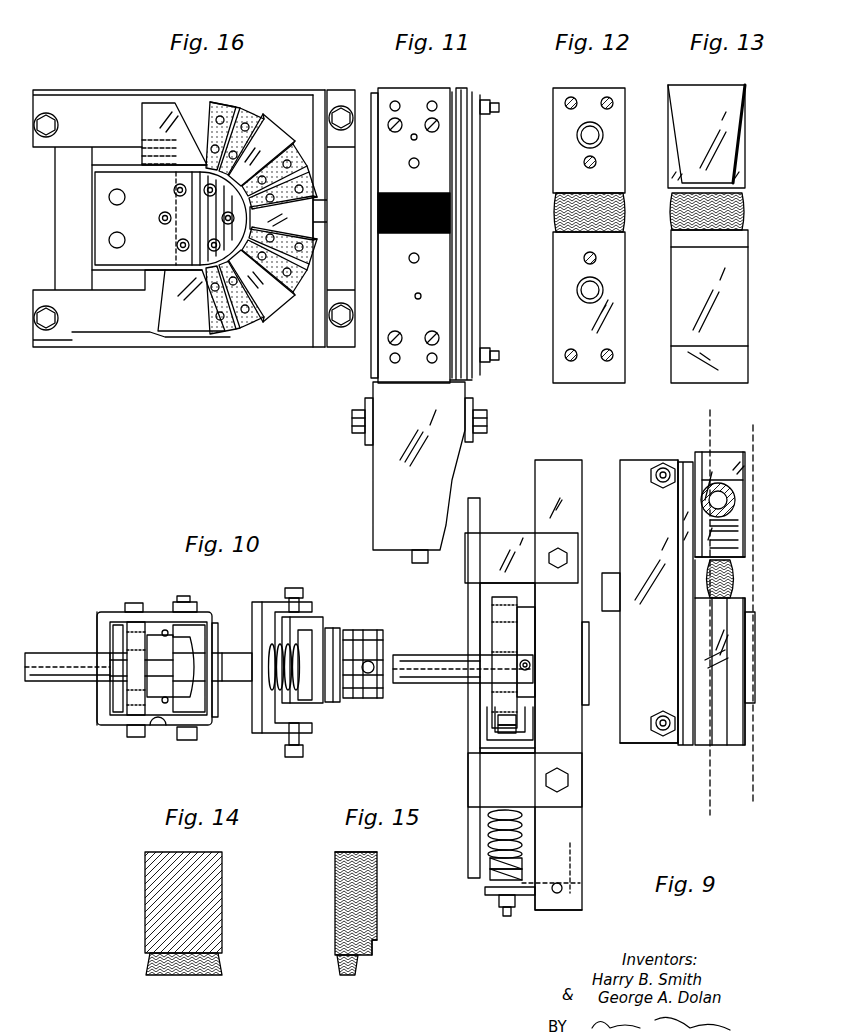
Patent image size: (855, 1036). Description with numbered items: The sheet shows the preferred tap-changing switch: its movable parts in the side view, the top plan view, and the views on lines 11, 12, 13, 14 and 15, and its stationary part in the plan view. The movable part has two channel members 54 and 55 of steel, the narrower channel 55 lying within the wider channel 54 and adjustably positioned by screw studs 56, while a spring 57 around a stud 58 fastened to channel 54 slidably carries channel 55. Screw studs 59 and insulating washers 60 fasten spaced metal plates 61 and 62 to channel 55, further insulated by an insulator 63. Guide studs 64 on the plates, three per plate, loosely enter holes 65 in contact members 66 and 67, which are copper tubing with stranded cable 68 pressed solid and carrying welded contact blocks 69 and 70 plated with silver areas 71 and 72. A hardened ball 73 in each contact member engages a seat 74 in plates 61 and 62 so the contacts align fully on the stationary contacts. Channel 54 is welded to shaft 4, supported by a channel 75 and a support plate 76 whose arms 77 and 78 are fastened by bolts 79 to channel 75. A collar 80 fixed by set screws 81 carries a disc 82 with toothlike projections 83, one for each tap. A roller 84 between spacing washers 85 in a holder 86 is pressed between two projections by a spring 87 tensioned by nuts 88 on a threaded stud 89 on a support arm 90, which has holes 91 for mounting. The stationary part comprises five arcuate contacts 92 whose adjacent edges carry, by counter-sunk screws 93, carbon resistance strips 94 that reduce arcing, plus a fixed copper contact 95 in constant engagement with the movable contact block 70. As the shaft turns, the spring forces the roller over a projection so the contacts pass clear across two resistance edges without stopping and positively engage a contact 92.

In FIG. 9, the shaft 4 is at (455, 670).
In FIG. 10, the shaft 4 is at (80, 682).
In FIG. 9, the section line 11— 11 is at (720, 777).
In FIG. 9, the section line 12— 12 is at (727, 801).
In FIG. 9, the section line 13— 13 is at (748, 752).
In FIG. 15, the section line 14— 14 is at (345, 992).
In FIG. 12, the section line 15— 15 is at (620, 212).
In FIG. 11, the channel member 54 is at (478, 245).
In FIG. 9, the channel member 54 is at (630, 732).
In FIG. 10, the channel member 54 is at (262, 735).
In FIG. 11, the channel member 55 is at (466, 292).
In FIG. 9, the channel member 55 is at (696, 660).
In FIG. 10, the channel member 55 is at (335, 645).
In FIG. 11, the adjustable screw studs 56 is at (497, 100).
In FIG. 9, the adjustable screw studs 56 is at (650, 466).
In FIG. 10, the adjustable screw studs 56 is at (302, 588).
In FIG. 10, the spring 57 is at (284, 640).
In FIG. 9, the stud 58 is at (625, 590).
In FIG. 10, the stud 58 is at (216, 702).
In FIG. 10, the screw studs 59 is at (310, 640).
In FIG. 10, the insulating washers 60 is at (336, 658).
In FIG. 11, the metal plate 61 is at (400, 100).
In FIG. 9, the metal plate 61 is at (700, 465).
In FIG. 10, the metal plate 61 is at (380, 668).
In FIG. 11, the metal plate 62 is at (372, 360).
In FIG. 9, the metal plate 62 is at (700, 745).
In FIG. 11, the insulator 63 is at (418, 233).
In FIG. 9, the insulator 63 is at (692, 590).
In FIG. 10, the insulator 63 is at (355, 688).
In FIG. 11, the guide studs 64 is at (437, 103).
In FIG. 12, the guide studs 64 is at (566, 106).
In FIG. 9, the guide studs 64 is at (702, 470).
In FIG. 10, the guide studs 64 is at (364, 665).
In FIG. 12, the holes 65 is at (595, 116).
In FIG. 9, the holes 65 is at (746, 545).
In FIG. 9, the contact member 66 is at (722, 455).
In FIG. 10, the contact member 66 is at (370, 636).
In FIG. 14, the contact member 66 is at (145, 880).
In FIG. 15, the contact member 66 is at (335, 895).
In FIG. 12, the contact member 67 is at (562, 333).
In FIG. 9, the contact member 67 is at (727, 745).
In FIG. 12, the flexible stranded copper cable 68 is at (556, 218).
In FIG. 13, the flexible stranded copper cable 68 is at (745, 212).
In FIG. 9, the flexible stranded copper cable 68 is at (733, 580).
In FIG. 14, the flexible stranded copper cable 68 is at (222, 968).
In FIG. 15, the flexible stranded copper cable 68 is at (337, 968).
In FIG. 11, the contact block 69 is at (424, 548).
In FIG. 12, the contact block 69 is at (566, 96).
In FIG. 13, the contact block 69 is at (742, 170).
In FIG. 9, the contact block 69 is at (746, 560).
In FIG. 10, the contact block 69 is at (386, 640).
In FIG. 15, the contact block 69 is at (378, 880).
In FIG. 13, the contact block 70 is at (740, 240).
In FIG. 9, the contact block 70 is at (750, 632).
In FIG. 13, the silver area 71 is at (722, 132).
In FIG. 9, the silver area 71 is at (742, 500).
In FIG. 10, the silver area 71 is at (384, 695).
In FIG. 15, the silver area 71 is at (378, 925).
In FIG. 13, the silver area 72 is at (740, 305).
In FIG. 9, the silver area 72 is at (750, 655).
In FIG. 12, the hardened ball 73 is at (578, 136).
In FIG. 9, the hardened ball 73 is at (735, 500).
In FIG. 10, the hardened ball 73 is at (372, 655).
In FIG. 11, the seat 74 is at (412, 139).
In FIG. 9, the seat 74 is at (730, 487).
In FIG. 11, the channel 75 is at (388, 494).
In FIG. 9, the channel 75 is at (553, 462).
In FIG. 9, the support plate 76 is at (470, 722).
In FIG. 10, the support plate 76 is at (97, 705).
In FIG. 9, the arms 77 is at (503, 533).
In FIG. 10, the arms 77 is at (160, 612).
In FIG. 11, the arms 78 is at (365, 445).
In FIG. 9, the arms 78 is at (490, 792).
In FIG. 10, the arms 78 is at (165, 742).
In FIG. 11, the bolts 79 is at (352, 425).
In FIG. 9, the bolts 79 is at (565, 554).
In FIG. 10, the bolts 79 is at (186, 600).
In FIG. 9, the collar 80 is at (530, 640).
In FIG. 10, the collar 80 is at (212, 632).
In FIG. 9, the set screws 81 is at (530, 664).
In FIG. 10, the set screws 81 is at (163, 630).
In FIG. 9, the disc 82 is at (496, 638).
In FIG. 10, the disc 82 is at (110, 640).
In FIG. 9, the projections 83 is at (497, 700).
In FIG. 9, the roller 84 is at (500, 738).
In FIG. 9, the spacing washers 85 is at (492, 735).
In FIG. 10, the spacing washers 85 is at (118, 690).
In FIG. 9, the holder 86 is at (535, 745).
In FIG. 10, the holder 86 is at (118, 710).
In FIG. 9, the spring 87 is at (525, 812).
In FIG. 9, the nuts 88 is at (490, 865).
In FIG. 9, the threaded stud 89 is at (500, 903).
In FIG. 9, the support arm 90 is at (531, 895).
In FIG. 9, the holes 91 is at (557, 894).
In FIG. 16, the contacts 92 is at (292, 122).
In FIG. 16, the counter-sunk screws 93 is at (245, 130).
In FIG. 16, the strips of resistance material 94 is at (305, 165).
In FIG. 16, the fixed contact 95 is at (108, 228).